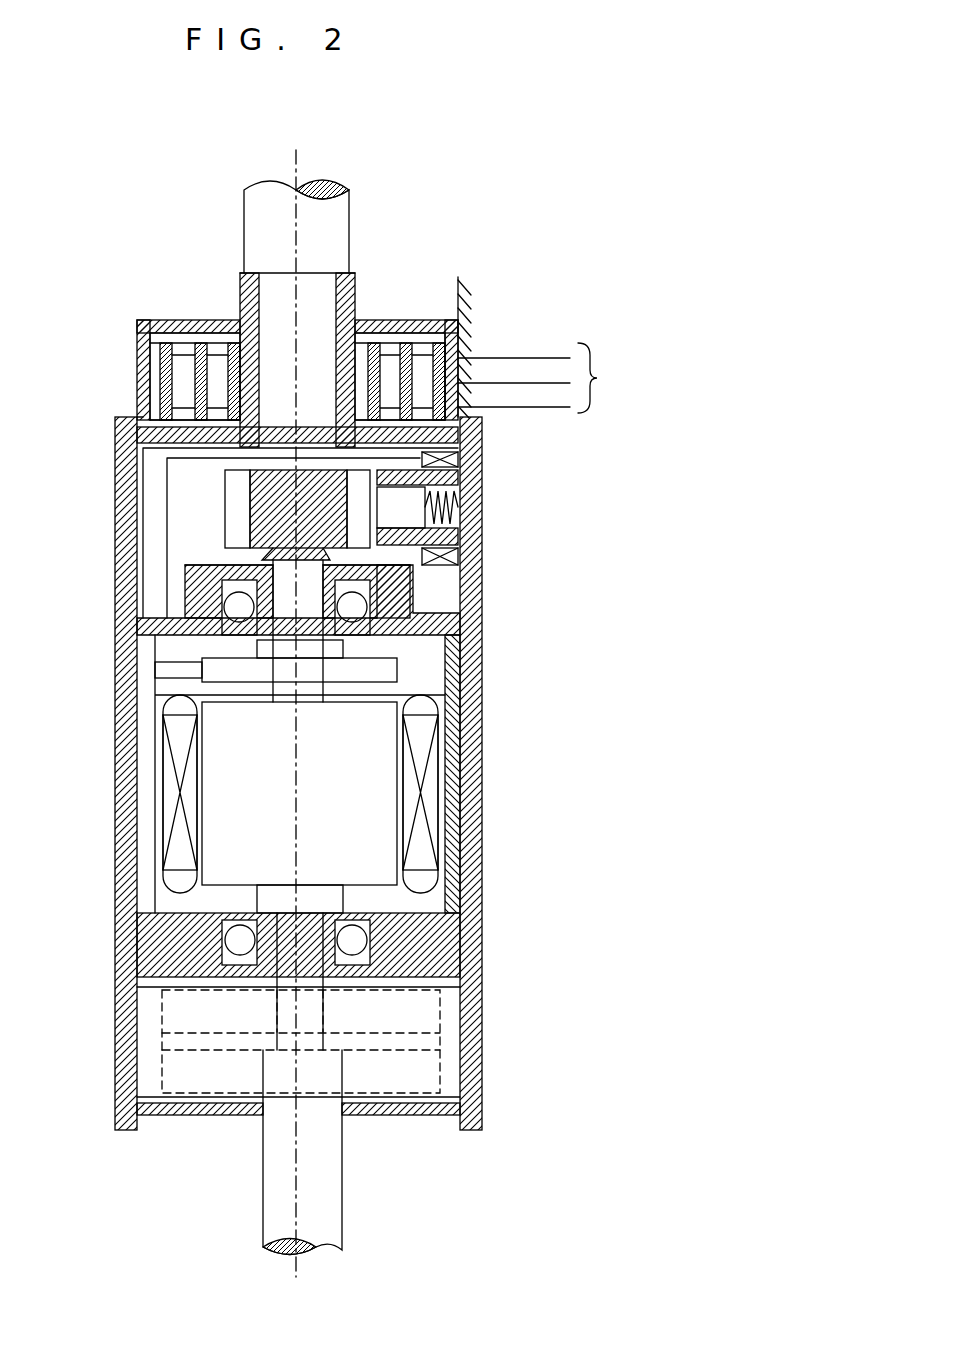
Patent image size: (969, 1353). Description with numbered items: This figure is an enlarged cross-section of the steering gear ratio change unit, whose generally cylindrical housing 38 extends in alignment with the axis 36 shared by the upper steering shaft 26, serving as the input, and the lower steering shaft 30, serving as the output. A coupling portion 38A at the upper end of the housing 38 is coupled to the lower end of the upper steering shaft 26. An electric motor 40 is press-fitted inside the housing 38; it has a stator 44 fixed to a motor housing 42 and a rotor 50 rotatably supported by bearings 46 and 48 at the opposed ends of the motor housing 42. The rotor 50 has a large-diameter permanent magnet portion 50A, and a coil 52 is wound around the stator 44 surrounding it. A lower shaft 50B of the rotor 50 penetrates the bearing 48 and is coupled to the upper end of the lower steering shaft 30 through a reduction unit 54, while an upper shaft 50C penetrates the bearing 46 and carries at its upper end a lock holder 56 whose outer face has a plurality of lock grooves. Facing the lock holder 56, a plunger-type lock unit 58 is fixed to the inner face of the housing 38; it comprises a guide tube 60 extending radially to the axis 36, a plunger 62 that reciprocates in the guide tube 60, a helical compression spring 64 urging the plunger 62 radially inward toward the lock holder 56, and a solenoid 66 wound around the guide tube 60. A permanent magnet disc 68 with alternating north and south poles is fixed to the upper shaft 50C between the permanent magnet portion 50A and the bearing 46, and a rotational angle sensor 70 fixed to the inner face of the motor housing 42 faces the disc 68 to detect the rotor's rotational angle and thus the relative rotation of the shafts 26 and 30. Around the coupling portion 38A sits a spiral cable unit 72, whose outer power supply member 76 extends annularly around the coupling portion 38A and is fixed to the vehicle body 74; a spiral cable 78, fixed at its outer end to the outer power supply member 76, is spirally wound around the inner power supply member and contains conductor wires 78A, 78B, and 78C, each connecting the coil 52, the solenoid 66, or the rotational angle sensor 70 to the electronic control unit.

The upper steering shaft 26 is at (330, 230).
The lower steering shaft 30 is at (330, 1195).
The axis 36 is at (292, 160).
The housing 38 is at (247, 773).
The coupling portion 38A is at (250, 292).
The electric motor 40 is at (301, 841).
The motor housing 42 is at (460, 796).
The stator 44 is at (420, 893).
The bearing 46 is at (236, 603).
The bearing 48 is at (356, 947).
The rotor 50 is at (221, 876).
The permanent magnet portion 50A is at (388, 802).
The lower shaft 50B is at (290, 975).
The upper shaft 50C is at (308, 688).
The coil 52 is at (180, 792).
The reduction unit 54 is at (202, 1080).
The lock holder 56 is at (235, 504).
The lock unit 58 is at (448, 574).
The guide tube 60 is at (400, 505).
The plunger 62 is at (440, 556).
The helical compression spring 64 is at (442, 510).
The solenoid 66 is at (440, 458).
The permanent magnet disc 68 is at (385, 672).
The rotational angle sensor 70 is at (165, 670).
The spiral cable unit 72 is at (253, 350).
The vehicle body 74 is at (463, 288).
The outer power supply member 76 is at (400, 322).
The spiral cable 78 is at (162, 330).
The conductor wire 78A is at (146, 562).
The conductor wire 78B is at (170, 428).
The conductor wire 78C is at (168, 475).